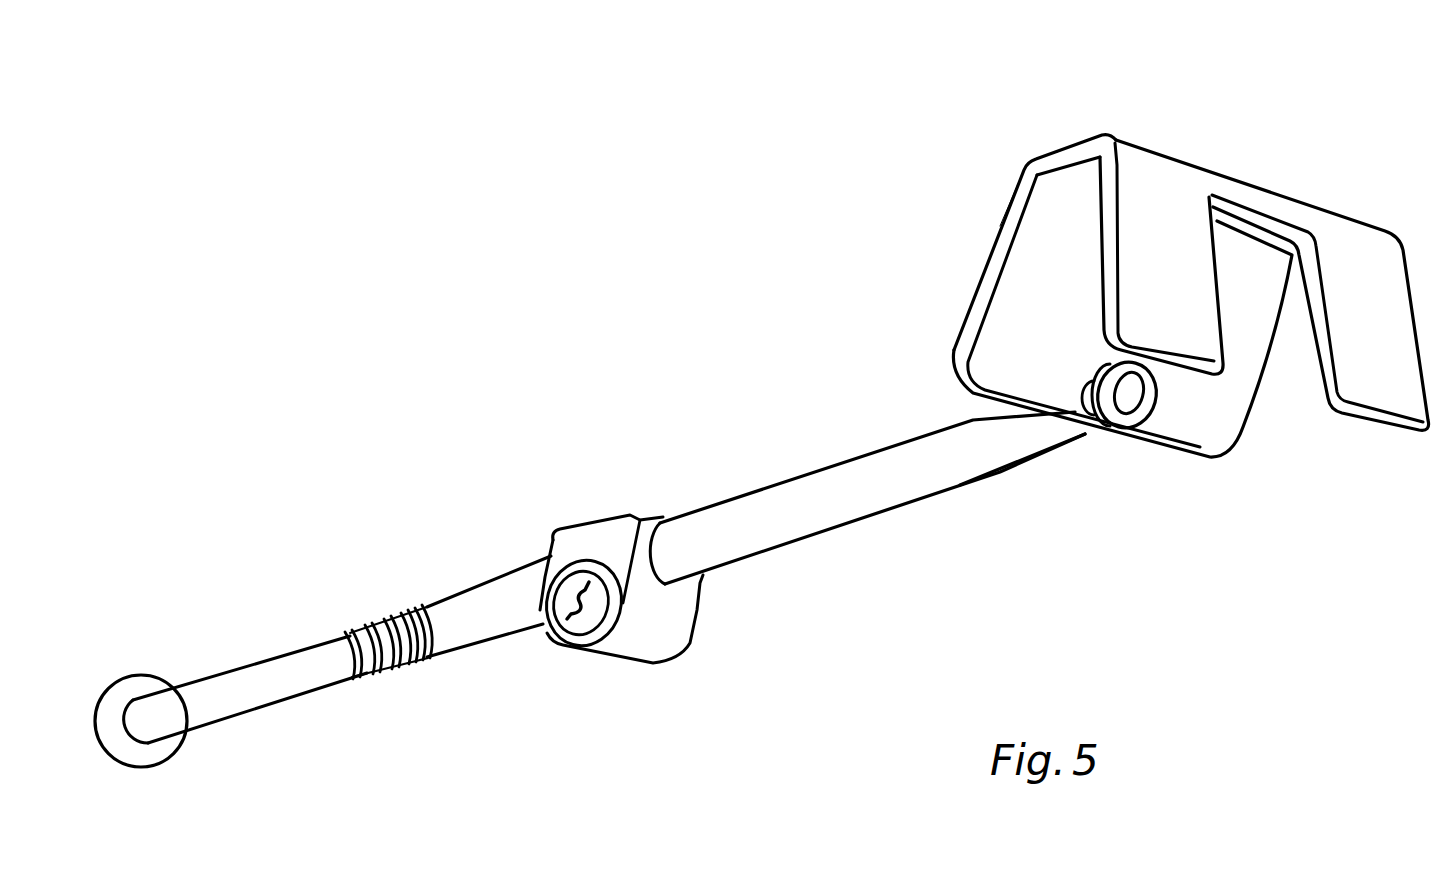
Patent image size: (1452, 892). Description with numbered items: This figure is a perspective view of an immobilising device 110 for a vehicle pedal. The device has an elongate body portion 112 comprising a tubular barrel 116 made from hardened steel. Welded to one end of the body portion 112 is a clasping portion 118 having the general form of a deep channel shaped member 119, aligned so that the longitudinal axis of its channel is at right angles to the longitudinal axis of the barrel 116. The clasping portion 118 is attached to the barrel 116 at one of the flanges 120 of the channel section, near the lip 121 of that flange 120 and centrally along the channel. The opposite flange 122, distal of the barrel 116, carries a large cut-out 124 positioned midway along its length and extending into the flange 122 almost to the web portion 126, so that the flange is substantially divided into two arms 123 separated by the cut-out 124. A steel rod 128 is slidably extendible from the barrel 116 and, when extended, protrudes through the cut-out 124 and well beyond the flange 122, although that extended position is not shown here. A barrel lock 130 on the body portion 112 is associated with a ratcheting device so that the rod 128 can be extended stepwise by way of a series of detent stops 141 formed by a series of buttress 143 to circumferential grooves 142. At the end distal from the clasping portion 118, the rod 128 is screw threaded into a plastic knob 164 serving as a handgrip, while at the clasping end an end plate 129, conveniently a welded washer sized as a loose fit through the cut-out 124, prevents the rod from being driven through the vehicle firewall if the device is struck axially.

The immobilising device 110 is at (661, 324).
The elongate body portion 112 is at (803, 478).
The tubular barrel 116 is at (1003, 473).
The clasping portion 118 is at (1357, 217).
The channel shaped member 119 is at (1013, 190).
The flange 120 is at (987, 267).
The lip 121 is at (1183, 467).
The opposite flange 122 is at (1157, 177).
The arms 123 is at (1182, 325).
The cut-out 124 is at (1282, 403).
The web portion 126 is at (1063, 147).
The steel rod 128 is at (310, 643).
The end plate 129 is at (1153, 427).
The barrel lock 130 is at (560, 645).
The detent stops 141 is at (367, 675).
The circumferential grooves 142 is at (373, 627).
The buttress 143 is at (387, 663).
The plastic knob 164 is at (133, 673).